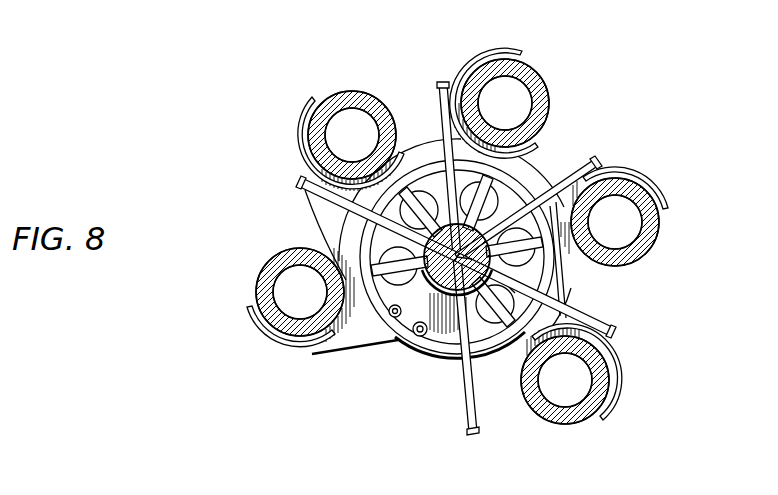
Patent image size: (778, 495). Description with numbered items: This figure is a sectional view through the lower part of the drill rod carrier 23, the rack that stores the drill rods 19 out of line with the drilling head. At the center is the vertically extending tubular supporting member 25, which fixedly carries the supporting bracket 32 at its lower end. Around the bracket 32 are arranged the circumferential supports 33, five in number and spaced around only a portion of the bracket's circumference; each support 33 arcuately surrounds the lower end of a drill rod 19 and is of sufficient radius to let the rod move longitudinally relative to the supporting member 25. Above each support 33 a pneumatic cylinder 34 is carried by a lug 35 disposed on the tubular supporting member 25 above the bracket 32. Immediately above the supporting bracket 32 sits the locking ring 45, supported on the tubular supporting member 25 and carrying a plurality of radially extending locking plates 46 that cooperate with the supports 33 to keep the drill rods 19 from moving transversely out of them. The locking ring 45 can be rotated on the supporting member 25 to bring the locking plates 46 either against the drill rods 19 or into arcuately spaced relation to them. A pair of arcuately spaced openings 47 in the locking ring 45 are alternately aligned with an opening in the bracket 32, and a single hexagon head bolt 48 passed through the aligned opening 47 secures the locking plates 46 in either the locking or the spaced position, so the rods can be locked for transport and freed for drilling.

The drill rod 19 is at (350, 103).
The drill rod carrier 23 is at (626, 88).
The tubular supporting member 25 is at (535, 278).
The supporting bracket 32 is at (434, 187).
The circumferential support 33 is at (302, 129).
The pneumatic cylinder 34 is at (495, 203).
The lug 35 is at (507, 306).
The locking ring 45 is at (447, 338).
The locking plate 46 is at (442, 82).
The opening 47 is at (395, 318).
The hexagon head bolt 48 is at (419, 337).